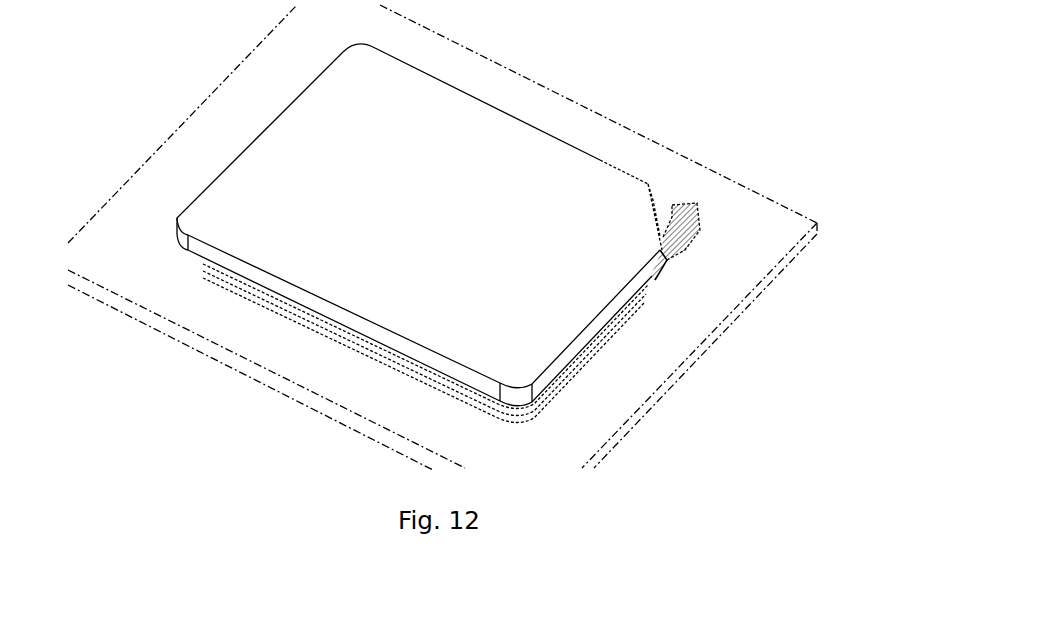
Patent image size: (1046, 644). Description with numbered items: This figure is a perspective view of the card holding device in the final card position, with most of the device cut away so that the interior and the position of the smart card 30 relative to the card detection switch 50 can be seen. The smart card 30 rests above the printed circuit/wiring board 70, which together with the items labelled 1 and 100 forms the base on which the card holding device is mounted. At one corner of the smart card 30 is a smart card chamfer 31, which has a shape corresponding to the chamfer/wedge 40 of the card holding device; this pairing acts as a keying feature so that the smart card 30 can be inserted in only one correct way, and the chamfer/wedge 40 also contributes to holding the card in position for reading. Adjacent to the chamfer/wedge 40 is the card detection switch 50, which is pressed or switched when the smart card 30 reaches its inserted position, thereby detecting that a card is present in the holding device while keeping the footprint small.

The electronic assembly 1 is at (441, 237).
The printed circuit/wiring board 70 is at (441, 237).
The support plate 100 is at (328, 375).
The smart card 30 is at (337, 130).
The smart card chamfer 31 is at (655, 212).
The chamfer/wedge of the card holding device 40 is at (672, 212).
The card detection switch 50 is at (667, 258).